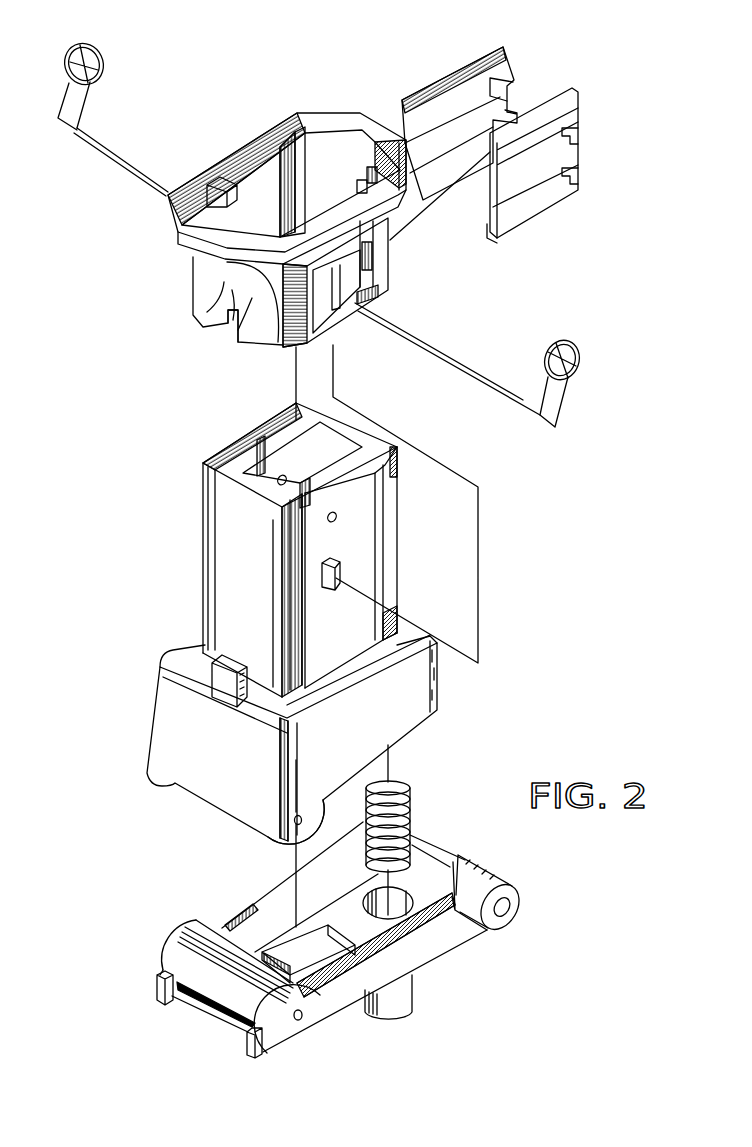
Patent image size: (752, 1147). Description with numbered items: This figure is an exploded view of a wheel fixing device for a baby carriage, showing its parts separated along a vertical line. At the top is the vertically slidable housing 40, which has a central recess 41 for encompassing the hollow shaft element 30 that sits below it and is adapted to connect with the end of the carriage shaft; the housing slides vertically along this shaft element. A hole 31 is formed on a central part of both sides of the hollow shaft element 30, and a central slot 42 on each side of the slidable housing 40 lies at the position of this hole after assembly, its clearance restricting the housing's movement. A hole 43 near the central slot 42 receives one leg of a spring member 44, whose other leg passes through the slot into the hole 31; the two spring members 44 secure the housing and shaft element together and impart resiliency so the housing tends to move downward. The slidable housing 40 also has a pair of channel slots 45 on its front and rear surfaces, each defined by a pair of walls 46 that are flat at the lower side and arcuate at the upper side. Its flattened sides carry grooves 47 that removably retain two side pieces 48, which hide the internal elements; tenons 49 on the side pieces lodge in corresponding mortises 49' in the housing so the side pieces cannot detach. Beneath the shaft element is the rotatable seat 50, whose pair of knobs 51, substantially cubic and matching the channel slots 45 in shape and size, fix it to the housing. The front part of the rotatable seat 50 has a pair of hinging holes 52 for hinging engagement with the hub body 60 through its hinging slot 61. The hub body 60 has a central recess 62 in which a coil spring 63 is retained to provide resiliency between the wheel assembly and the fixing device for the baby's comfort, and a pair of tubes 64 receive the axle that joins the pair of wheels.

The hollow shaft element 30 is at (380, 441).
The hole 31 is at (336, 578).
The slidable housing 40 is at (341, 126).
The central recess 41 is at (268, 180).
The central slot 42 is at (357, 300).
The hole 43 is at (322, 280).
The spring member 44 is at (102, 62).
The channel slot 45 is at (226, 332).
The wall 46 is at (205, 300).
The groove 47 is at (393, 291).
The side piece 48 is at (477, 70).
The tenon 49 is at (527, 89).
The mortise 49' is at (401, 254).
The rotatable seat 50 is at (428, 700).
The knob 51 is at (210, 673).
The hinging hole 52 is at (285, 843).
The hub body 60 is at (443, 938).
The hinging slot 61 is at (300, 1021).
The central recess 62 is at (397, 908).
The coil spring 63 is at (410, 815).
The tube 64 is at (490, 877).